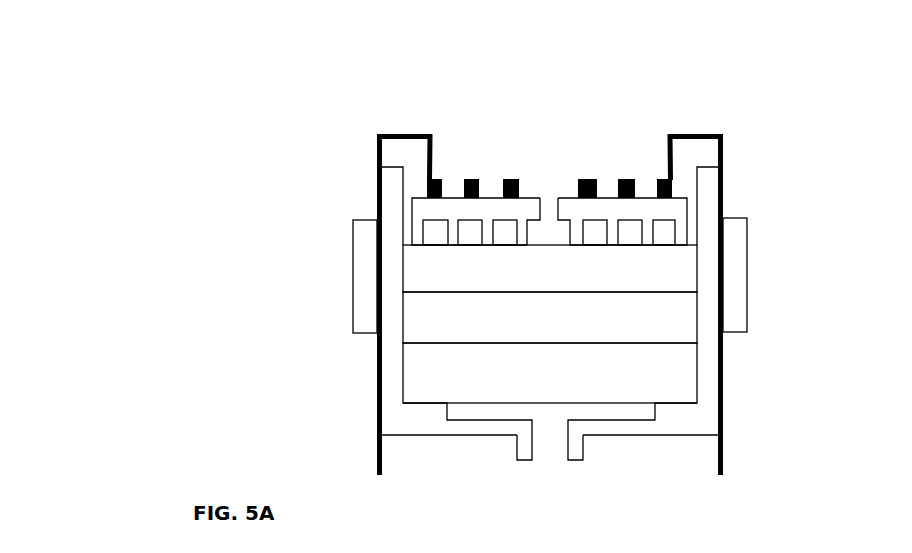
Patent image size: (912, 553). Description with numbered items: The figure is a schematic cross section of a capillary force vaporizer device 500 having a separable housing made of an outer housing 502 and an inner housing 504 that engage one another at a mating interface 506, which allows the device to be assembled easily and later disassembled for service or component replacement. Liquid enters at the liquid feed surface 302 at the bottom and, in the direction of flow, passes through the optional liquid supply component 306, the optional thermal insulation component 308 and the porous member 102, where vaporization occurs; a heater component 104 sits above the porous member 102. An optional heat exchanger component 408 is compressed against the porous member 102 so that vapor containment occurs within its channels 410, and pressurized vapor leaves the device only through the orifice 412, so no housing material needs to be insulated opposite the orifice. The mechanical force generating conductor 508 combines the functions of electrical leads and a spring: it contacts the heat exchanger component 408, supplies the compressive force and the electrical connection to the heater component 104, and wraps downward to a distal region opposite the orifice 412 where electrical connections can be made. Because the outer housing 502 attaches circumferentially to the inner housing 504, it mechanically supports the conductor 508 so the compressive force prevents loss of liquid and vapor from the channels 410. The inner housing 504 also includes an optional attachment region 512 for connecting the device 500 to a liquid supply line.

The capillary force vaporizer device 500 is at (284, 48).
The mechanical force generating conductor 508 is at (377, 459).
The inner housing 504 is at (700, 417).
The outer housing 502 is at (733, 248).
The mating interface 506 is at (722, 307).
The porous member 102 is at (435, 262).
The thermal insulation component 308 is at (435, 308).
The liquid supply component 306 is at (435, 357).
The heat exchanger component 408 is at (663, 212).
The orifice 412 is at (552, 205).
The channels 410 is at (595, 232).
The heater component 104 is at (627, 200).
The liquid feed surface 302 is at (580, 403).
The attachment region 512 is at (526, 450).